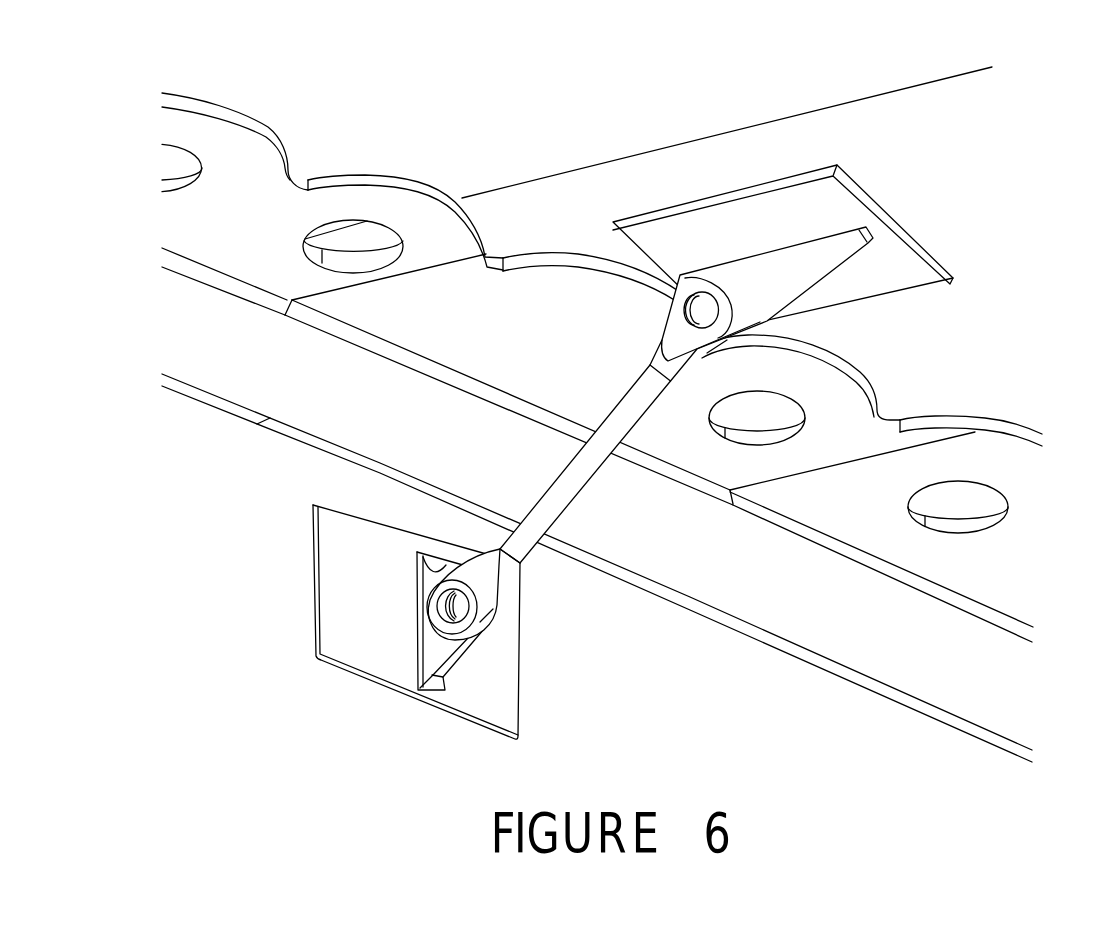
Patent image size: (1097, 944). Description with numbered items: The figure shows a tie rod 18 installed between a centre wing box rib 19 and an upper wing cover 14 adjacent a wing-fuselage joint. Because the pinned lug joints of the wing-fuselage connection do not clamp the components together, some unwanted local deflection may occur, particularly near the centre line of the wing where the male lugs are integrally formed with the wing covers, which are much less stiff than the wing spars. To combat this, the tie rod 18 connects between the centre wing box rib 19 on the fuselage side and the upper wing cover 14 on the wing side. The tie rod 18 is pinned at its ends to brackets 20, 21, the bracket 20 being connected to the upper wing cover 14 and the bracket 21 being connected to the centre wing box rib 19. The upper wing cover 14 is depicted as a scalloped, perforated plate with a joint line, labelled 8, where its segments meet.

The rail section joint 8 is at (483, 291).
The upper wing cover 14 is at (1058, 266).
The tie rod 18 is at (533, 546).
The centre wing box rib 19 is at (256, 666).
The bracket 20 is at (825, 225).
The bracket 21 is at (392, 634).